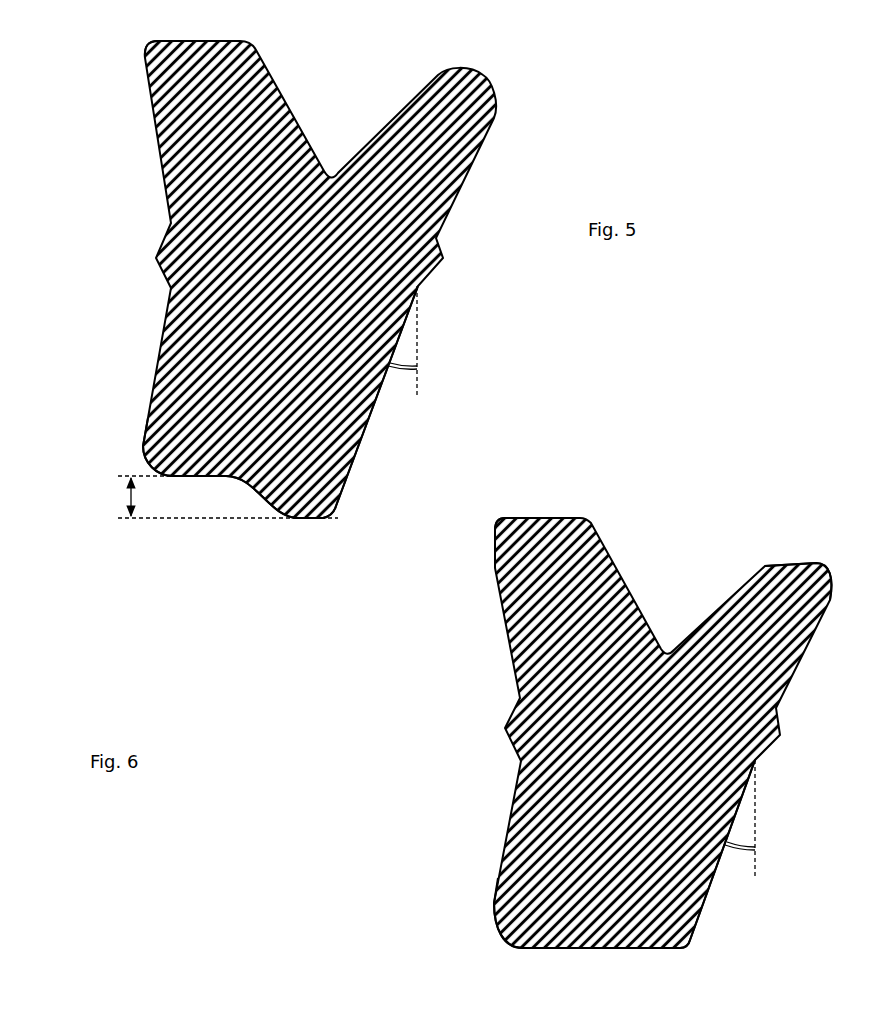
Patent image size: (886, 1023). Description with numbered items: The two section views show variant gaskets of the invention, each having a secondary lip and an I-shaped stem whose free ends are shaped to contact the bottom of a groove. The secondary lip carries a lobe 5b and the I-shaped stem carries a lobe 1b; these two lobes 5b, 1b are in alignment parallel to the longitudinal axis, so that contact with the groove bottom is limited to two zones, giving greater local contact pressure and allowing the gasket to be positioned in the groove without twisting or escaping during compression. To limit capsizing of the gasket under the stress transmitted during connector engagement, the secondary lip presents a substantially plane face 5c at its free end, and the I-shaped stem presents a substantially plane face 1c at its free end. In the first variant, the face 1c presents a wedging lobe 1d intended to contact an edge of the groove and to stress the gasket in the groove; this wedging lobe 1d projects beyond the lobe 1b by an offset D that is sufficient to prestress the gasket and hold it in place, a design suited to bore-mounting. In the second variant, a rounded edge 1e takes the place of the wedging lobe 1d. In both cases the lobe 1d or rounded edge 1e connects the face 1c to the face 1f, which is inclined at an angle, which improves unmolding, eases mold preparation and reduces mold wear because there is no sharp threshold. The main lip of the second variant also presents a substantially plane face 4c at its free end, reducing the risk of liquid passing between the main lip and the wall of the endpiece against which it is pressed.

In FIG. 5, the lobe 5b is at (136, 41).
In FIG. 6, the lobe 5b is at (484, 519).
In FIG. 5, the face 5c is at (200, 33).
In FIG. 5, the lobe 1b is at (124, 440).
In FIG. 6, the lobe 1b is at (477, 899).
In FIG. 5, the face 1c is at (190, 482).
In FIG. 6, the face 1c is at (538, 943).
In FIG. 5, the wedging lobe 1d is at (300, 520).
In FIG. 6, the rounded edge 1e is at (686, 943).
In FIG. 5, the face 1f is at (362, 422).
In FIG. 6, the face 1f is at (707, 883).
In FIG. 6, the face 4c is at (796, 570).
In FIG. 5, the offset D is at (118, 490).